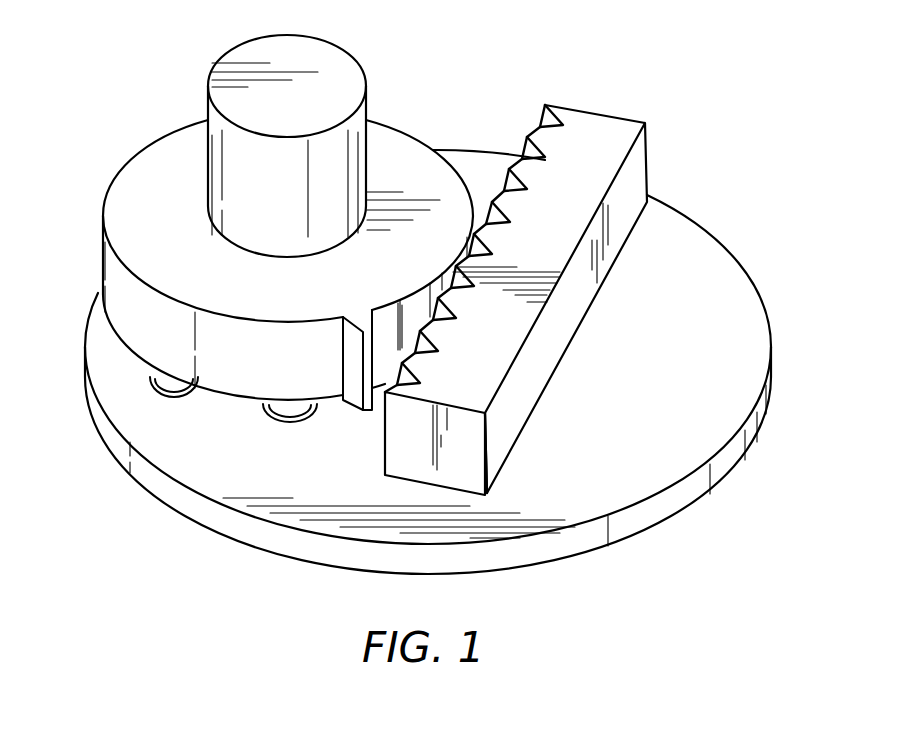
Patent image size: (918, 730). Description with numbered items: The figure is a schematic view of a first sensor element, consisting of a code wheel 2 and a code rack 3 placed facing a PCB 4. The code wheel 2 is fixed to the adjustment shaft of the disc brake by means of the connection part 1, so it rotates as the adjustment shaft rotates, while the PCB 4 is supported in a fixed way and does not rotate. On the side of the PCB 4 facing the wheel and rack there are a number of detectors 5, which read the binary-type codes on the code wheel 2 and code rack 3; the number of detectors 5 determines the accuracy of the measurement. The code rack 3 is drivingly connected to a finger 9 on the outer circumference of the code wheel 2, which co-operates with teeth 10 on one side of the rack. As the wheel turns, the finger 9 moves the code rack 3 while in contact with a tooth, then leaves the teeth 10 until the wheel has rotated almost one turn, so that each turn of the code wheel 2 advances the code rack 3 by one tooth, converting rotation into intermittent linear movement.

The connection part 1 is at (338, 87).
The code wheel 2 is at (148, 165).
The code rack 3 is at (533, 275).
The PCB 4 is at (727, 337).
The detectors 5 is at (155, 372).
The finger 9 is at (356, 376).
The teeth 10 is at (535, 132).